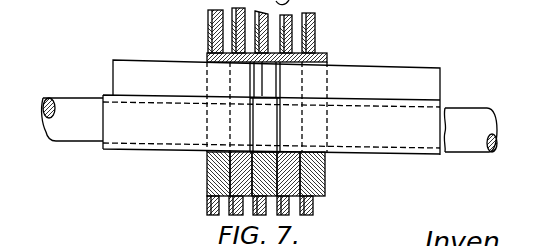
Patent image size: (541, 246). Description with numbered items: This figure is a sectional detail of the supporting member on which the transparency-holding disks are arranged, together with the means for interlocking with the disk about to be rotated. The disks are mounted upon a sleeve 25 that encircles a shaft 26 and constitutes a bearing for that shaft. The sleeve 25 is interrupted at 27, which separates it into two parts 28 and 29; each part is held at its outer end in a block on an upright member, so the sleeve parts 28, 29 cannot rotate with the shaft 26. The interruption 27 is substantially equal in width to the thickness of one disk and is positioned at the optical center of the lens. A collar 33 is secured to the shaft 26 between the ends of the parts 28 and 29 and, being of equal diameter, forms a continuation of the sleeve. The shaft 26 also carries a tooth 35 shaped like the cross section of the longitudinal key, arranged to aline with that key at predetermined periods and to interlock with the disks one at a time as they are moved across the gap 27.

The sleeve 25 is at (445, 110).
The shaft 26 is at (487, 110).
The interruption 27 is at (283, 143).
The sleeve part 28 is at (427, 140).
The sleeve part 29 is at (168, 137).
The collar 33 is at (263, 140).
The tooth 35 is at (265, 89).